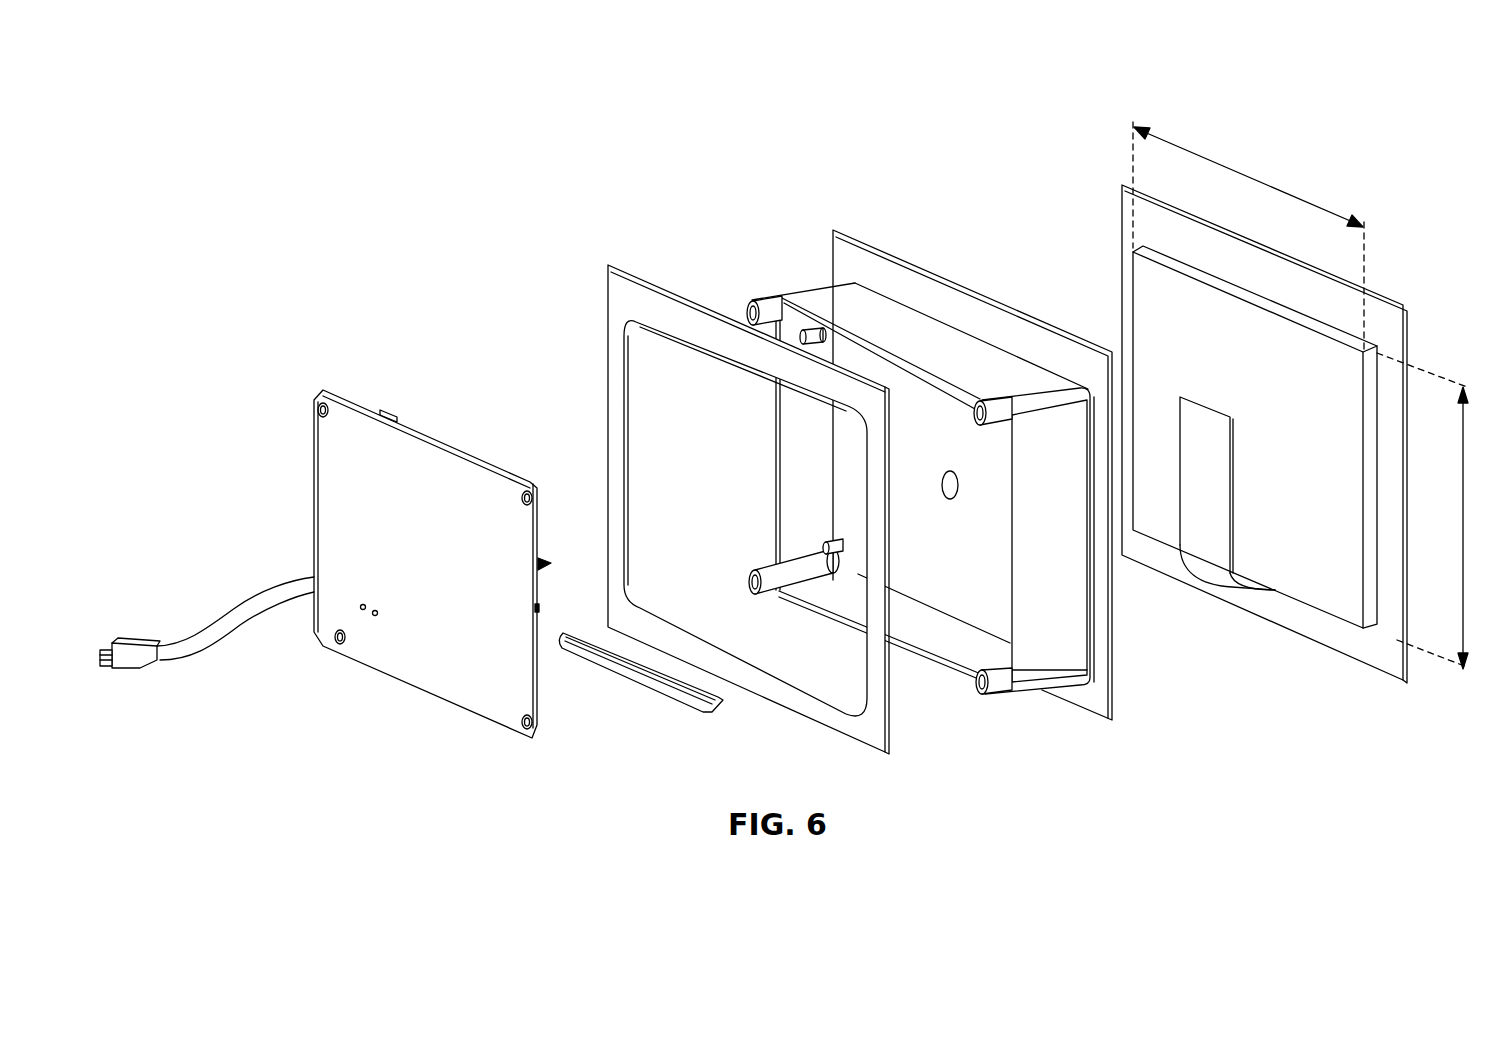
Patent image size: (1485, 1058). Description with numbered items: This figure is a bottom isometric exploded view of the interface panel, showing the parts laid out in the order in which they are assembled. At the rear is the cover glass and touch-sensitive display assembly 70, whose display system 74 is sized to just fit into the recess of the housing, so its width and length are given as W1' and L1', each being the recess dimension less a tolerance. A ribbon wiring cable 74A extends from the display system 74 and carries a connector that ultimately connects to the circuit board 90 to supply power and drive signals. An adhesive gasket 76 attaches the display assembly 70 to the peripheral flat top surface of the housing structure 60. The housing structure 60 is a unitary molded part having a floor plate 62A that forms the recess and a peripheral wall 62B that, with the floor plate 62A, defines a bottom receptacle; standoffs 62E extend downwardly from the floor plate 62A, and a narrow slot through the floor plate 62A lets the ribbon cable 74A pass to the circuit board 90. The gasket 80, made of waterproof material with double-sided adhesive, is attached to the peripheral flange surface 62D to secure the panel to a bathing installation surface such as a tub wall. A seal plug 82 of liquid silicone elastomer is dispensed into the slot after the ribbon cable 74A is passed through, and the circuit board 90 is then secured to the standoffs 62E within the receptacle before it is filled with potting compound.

The housing structure 60 is at (929, 446).
The floor plate 62A is at (963, 580).
The peripheral wall 62B is at (838, 297).
The peripheral flange surface 62D is at (967, 313).
The standoffs 62E is at (832, 333).
The cover glass and touch-sensitive display assembly 70 is at (1295, 413).
The display system 74 is at (1255, 437).
The ribbon wiring cable 74A is at (1232, 510).
The gasket 76 is at (1323, 628).
The gasket 80 is at (887, 728).
The seal plug 82 is at (630, 683).
The circuit board 90 is at (414, 407).
The length dimension of display system L1' is at (1248, 231).
The width dimension of display system W1' is at (1422, 511).